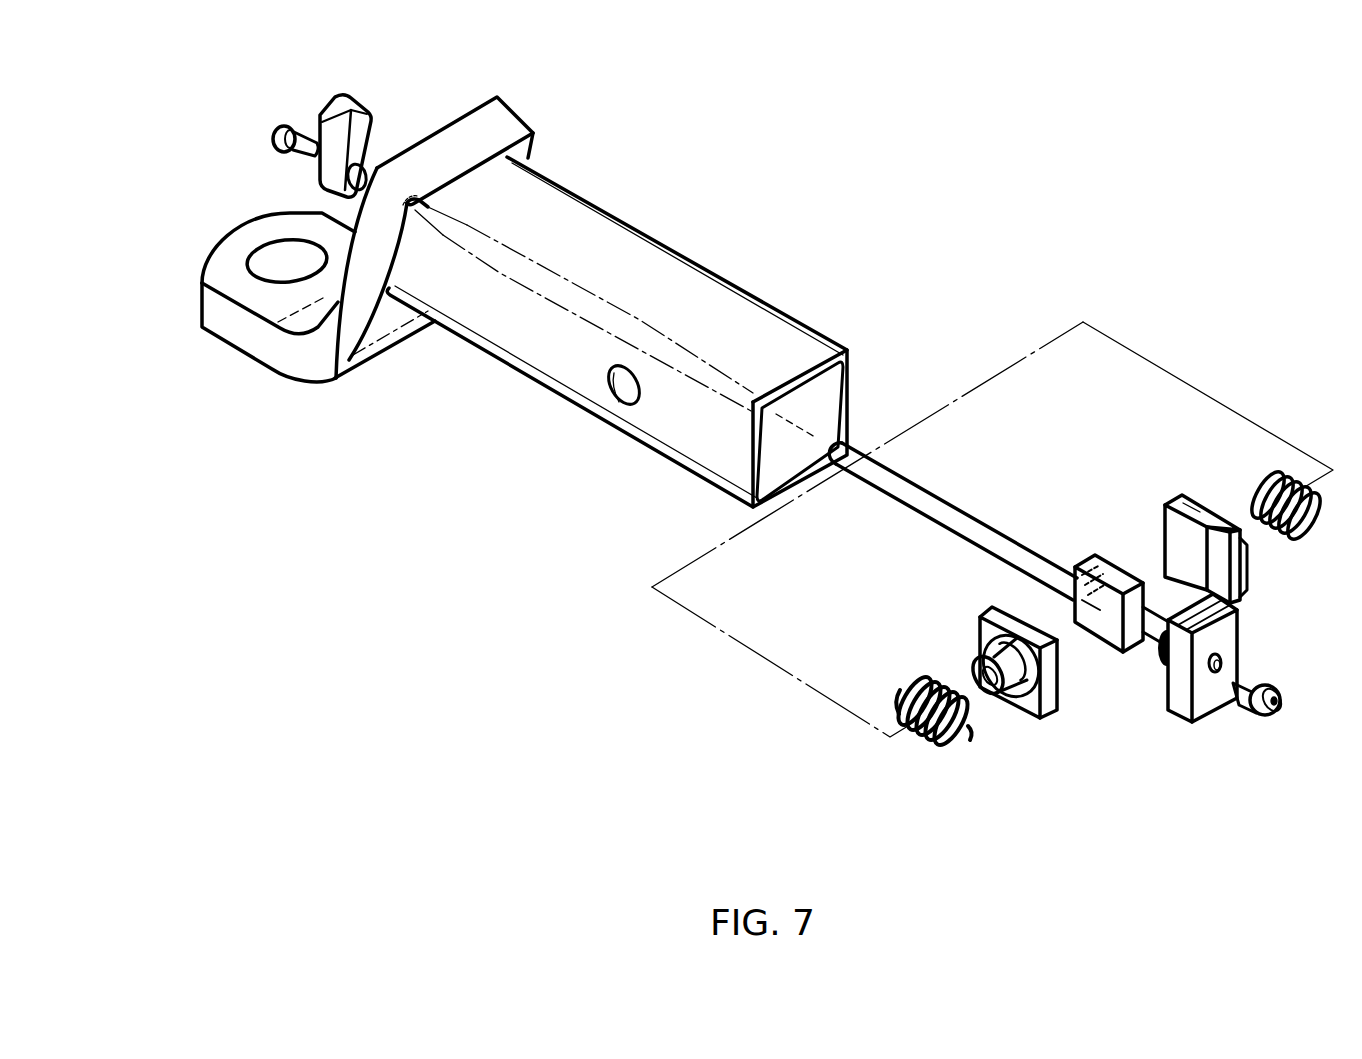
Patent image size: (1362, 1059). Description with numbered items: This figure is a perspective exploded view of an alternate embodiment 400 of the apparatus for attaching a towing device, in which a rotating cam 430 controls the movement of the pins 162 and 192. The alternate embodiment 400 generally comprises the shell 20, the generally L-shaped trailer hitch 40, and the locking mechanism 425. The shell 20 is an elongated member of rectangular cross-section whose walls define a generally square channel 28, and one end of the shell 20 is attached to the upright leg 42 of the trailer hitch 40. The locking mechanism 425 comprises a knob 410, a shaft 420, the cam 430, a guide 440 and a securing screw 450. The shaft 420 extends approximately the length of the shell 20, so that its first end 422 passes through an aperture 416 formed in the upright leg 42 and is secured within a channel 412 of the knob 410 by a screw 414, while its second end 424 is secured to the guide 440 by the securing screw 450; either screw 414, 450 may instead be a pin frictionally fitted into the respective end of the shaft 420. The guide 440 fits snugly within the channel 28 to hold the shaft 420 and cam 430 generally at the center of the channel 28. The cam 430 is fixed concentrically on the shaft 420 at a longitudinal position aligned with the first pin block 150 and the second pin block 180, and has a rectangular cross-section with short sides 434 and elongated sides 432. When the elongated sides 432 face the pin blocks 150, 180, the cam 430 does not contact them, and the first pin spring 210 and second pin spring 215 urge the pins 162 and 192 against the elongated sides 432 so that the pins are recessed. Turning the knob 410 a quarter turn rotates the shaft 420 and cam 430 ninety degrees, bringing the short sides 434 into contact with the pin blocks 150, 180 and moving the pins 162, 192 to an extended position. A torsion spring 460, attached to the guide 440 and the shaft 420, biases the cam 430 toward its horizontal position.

The shell 20 is at (515, 386).
The channel 28 is at (838, 393).
The trailer hitch 40 is at (228, 362).
The upright leg 42 is at (352, 287).
The first pin block 150 is at (1172, 498).
The first pin 162 is at (1247, 543).
The second pin block 180 is at (1007, 618).
The second pin 192 is at (980, 658).
The first pin spring 210 is at (1263, 482).
The second pin spring 215 is at (947, 747).
The alternate embodiment 400 is at (920, 202).
The knob 410 is at (353, 96).
The channel 412 is at (366, 165).
The screw 414 is at (275, 124).
The aperture 416 is at (403, 203).
The shaft 420 is at (945, 492).
The first end 422 is at (837, 457).
The second end 424 is at (1223, 660).
The locking mechanism 425 is at (898, 780).
The cam 430 is at (1096, 656).
The elongated sides 432 is at (1082, 608).
The short sides 434 is at (1090, 555).
The guide 440 is at (1183, 722).
The securing screw 450 is at (1253, 708).
The torsion spring 460 is at (1160, 673).